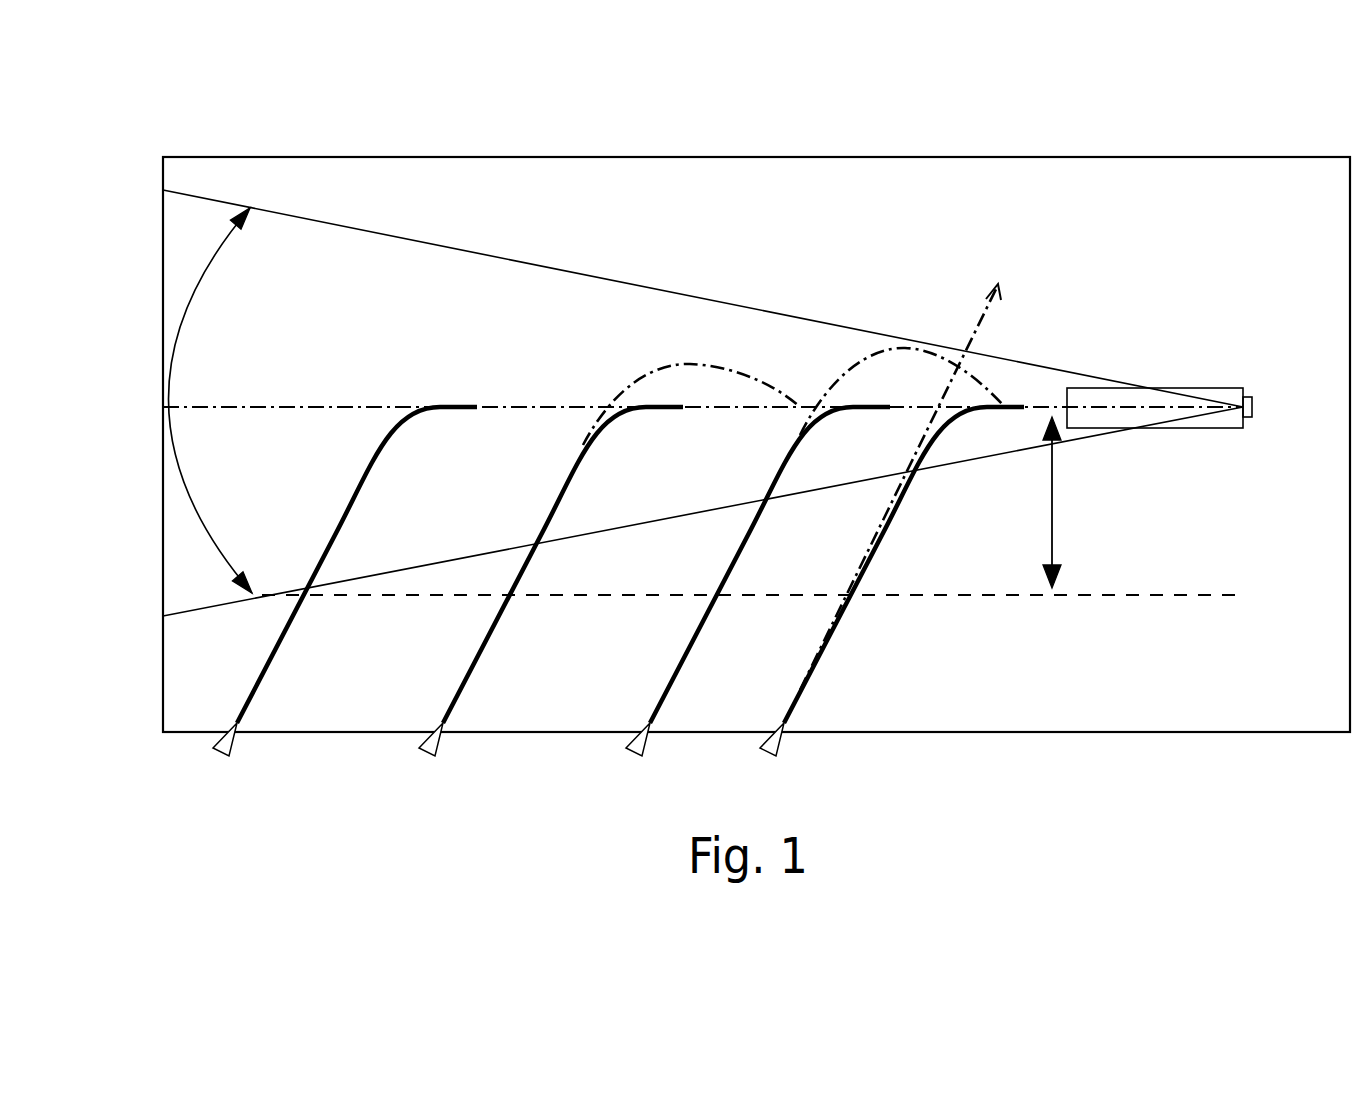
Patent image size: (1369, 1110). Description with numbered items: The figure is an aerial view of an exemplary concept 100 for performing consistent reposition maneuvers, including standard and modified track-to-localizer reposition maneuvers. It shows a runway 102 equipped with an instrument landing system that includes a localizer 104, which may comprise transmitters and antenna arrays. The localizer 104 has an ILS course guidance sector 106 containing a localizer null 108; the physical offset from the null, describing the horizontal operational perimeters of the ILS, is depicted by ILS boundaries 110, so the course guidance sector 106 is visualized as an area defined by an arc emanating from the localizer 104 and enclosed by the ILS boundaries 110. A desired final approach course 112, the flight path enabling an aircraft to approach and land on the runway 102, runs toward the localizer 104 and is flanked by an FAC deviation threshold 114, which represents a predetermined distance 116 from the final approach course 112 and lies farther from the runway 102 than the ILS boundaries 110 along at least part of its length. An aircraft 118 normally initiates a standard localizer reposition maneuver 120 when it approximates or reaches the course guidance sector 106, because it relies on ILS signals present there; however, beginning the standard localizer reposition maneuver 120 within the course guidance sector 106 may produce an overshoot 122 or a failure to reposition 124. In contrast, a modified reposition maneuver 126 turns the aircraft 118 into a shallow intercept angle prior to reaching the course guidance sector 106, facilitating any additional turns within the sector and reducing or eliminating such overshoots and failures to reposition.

The concept for performing consistent reposition maneuvers 100 is at (246, 115).
The runway 102 is at (1227, 388).
The localizer 104 is at (1253, 410).
The ILS course guidance sector 106 is at (185, 480).
The localizer null 108 is at (1125, 407).
The ILS boundaries 110 is at (475, 246).
The final approach course 112 is at (273, 410).
The FAC deviation threshold 114 is at (1008, 597).
The predetermined distance 116 is at (1078, 530).
The aircraft 118 is at (214, 762).
The standard localizer reposition maneuver 120 is at (597, 430).
The overshoot 122 is at (643, 375).
The failure to reposition 124 is at (967, 337).
The modified reposition maneuver 126 is at (263, 683).